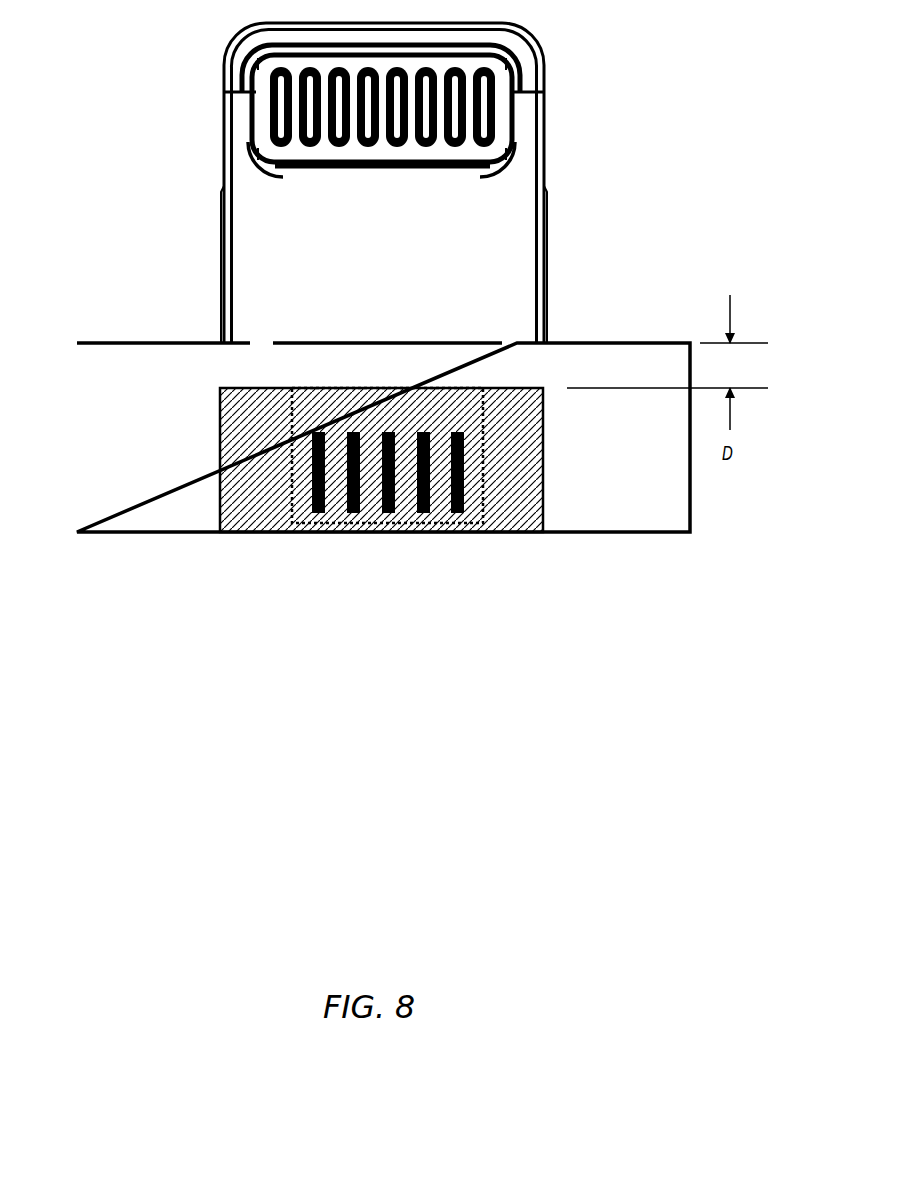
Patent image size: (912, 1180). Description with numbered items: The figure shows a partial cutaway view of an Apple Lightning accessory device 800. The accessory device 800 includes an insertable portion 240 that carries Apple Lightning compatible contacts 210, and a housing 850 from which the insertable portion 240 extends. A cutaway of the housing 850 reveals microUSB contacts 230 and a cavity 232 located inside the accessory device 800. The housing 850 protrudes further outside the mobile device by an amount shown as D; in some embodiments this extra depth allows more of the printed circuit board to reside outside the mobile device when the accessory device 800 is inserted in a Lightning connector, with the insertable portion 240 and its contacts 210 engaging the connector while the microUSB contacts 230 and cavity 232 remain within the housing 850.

The Apple Lightning compatible contacts 210 is at (341, 168).
The insertable portion 240 is at (222, 272).
The cavity 232 is at (218, 448).
The microUSB contacts 230 is at (463, 523).
The housing 850 is at (75, 467).
The Apple Lightning accessory device 800 is at (168, 653).